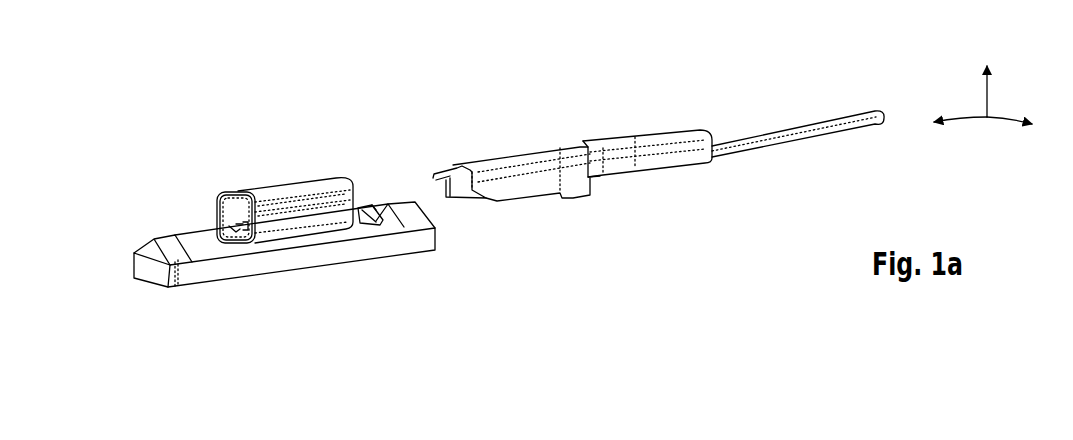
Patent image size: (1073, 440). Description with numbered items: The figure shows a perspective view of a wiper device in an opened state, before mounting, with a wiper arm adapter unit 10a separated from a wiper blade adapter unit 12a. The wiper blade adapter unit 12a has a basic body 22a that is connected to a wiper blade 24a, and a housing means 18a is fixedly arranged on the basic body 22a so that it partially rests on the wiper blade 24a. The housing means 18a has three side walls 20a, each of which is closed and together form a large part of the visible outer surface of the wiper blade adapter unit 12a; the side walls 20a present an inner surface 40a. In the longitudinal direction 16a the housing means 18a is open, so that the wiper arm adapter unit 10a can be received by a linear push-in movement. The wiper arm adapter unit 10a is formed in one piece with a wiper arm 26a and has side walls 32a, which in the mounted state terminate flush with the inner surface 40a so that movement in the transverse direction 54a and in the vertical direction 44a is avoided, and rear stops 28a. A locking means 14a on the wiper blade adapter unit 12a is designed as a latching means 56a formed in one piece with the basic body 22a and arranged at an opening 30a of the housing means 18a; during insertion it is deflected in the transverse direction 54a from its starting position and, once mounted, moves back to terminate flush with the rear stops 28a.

The wiper arm adapter unit 10a is at (530, 88).
The wiper blade adapter unit 12a is at (297, 134).
The locking means 14a is at (363, 170).
The longitudinal direction 16a is at (972, 115).
The housing means 18a is at (232, 190).
The side walls 20a is at (313, 213).
The basic body 22a is at (229, 228).
The wiper blade 24a is at (182, 250).
The wiper arm 26a is at (788, 130).
The rear stops 28a is at (593, 186).
The opening 30a is at (369, 206).
The side walls 32a is at (546, 190).
The inner surface 40a is at (245, 210).
The vertical direction 44a is at (983, 97).
The transverse direction 54a is at (1002, 118).
The latching means 56a is at (383, 208).